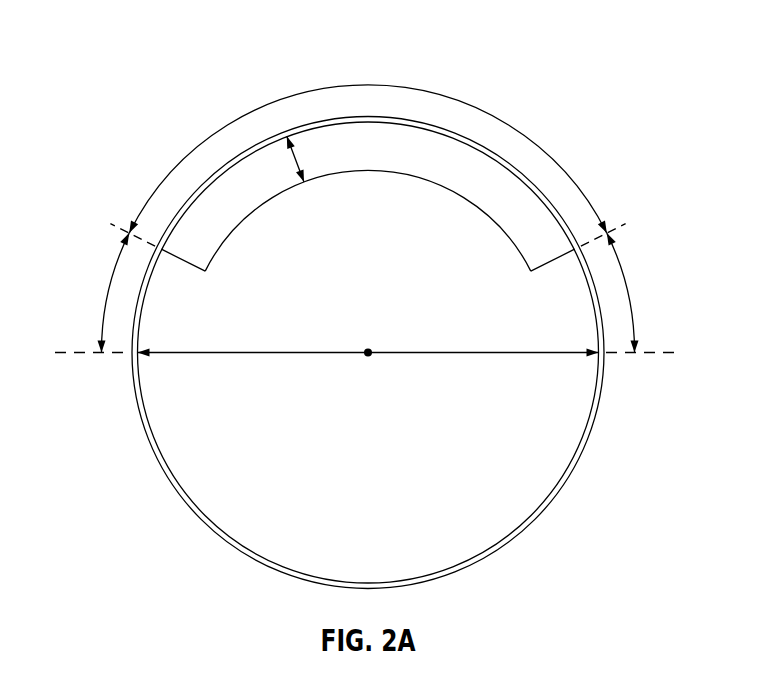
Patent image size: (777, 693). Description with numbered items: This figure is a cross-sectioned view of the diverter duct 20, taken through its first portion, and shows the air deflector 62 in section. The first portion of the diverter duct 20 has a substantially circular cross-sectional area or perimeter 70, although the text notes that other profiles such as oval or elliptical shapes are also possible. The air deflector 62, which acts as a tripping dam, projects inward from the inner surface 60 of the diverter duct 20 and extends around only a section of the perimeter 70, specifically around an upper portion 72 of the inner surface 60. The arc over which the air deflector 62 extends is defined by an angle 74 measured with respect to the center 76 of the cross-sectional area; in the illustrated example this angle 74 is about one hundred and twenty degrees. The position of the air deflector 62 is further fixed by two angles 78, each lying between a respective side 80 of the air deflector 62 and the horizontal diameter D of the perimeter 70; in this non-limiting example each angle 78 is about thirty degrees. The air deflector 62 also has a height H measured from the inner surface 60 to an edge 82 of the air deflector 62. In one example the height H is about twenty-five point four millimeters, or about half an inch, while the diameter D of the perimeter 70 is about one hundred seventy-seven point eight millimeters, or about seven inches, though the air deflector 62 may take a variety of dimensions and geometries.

The diverter duct 20 is at (606, 103).
The inner surface 60 is at (537, 510).
The air deflector 62 is at (366, 185).
The perimeter 70 is at (591, 430).
The upper portion 72 is at (508, 191).
The angle 74 is at (358, 86).
The center 76 is at (368, 357).
The angle 78 is at (108, 288).
The side 80 is at (199, 239).
The edge 82 is at (226, 229).
The horizontal diameter D is at (290, 355).
The height H is at (297, 165).